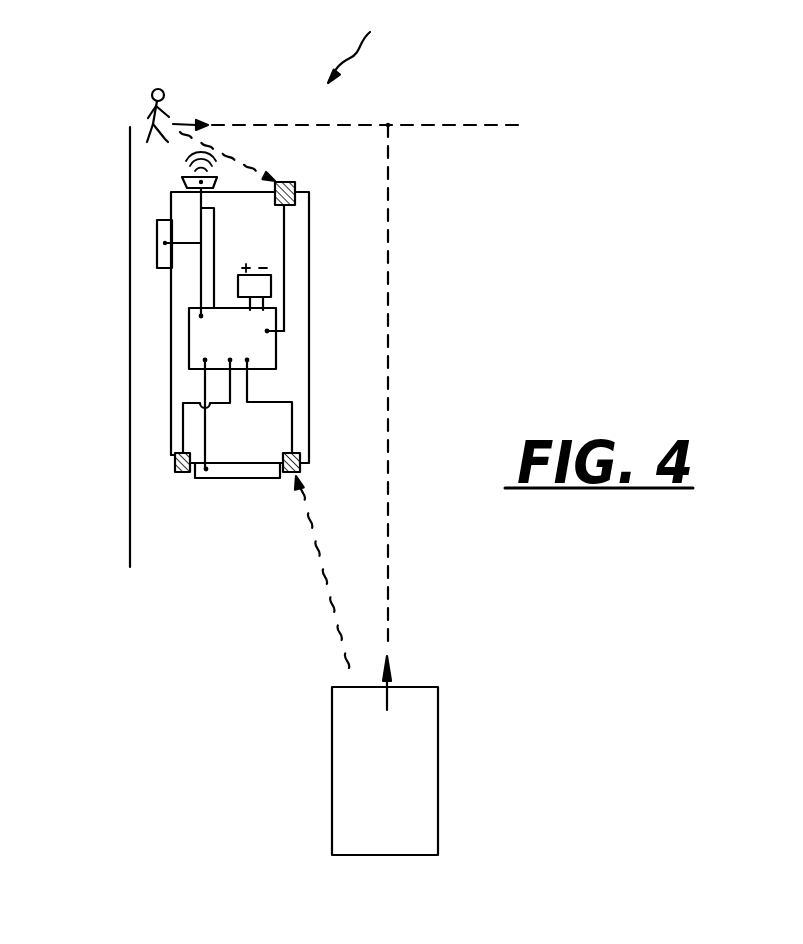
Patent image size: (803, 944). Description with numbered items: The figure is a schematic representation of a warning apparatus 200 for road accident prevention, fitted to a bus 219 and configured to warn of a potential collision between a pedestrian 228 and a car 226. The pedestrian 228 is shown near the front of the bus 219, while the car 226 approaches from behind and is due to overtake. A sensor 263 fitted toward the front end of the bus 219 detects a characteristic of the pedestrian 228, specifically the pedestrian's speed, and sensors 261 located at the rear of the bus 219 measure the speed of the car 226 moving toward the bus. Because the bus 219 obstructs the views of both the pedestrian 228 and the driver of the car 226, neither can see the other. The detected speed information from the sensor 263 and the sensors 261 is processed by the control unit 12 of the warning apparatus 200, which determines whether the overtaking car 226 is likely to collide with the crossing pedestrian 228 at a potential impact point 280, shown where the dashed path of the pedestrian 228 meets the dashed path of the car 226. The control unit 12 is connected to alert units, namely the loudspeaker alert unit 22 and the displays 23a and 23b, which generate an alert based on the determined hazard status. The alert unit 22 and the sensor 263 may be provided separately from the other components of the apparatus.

The warning apparatus 200 is at (375, 46).
The potential impact point 280 is at (389, 125).
The pedestrian 228 is at (152, 95).
The alert unit 22 is at (183, 180).
The sensor 263 is at (295, 183).
The display 23a is at (158, 258).
The bus 219 is at (309, 347).
The control unit 12 is at (237, 388).
The sensors 261 is at (185, 472).
The display 23b is at (232, 478).
The car 226 is at (438, 778).